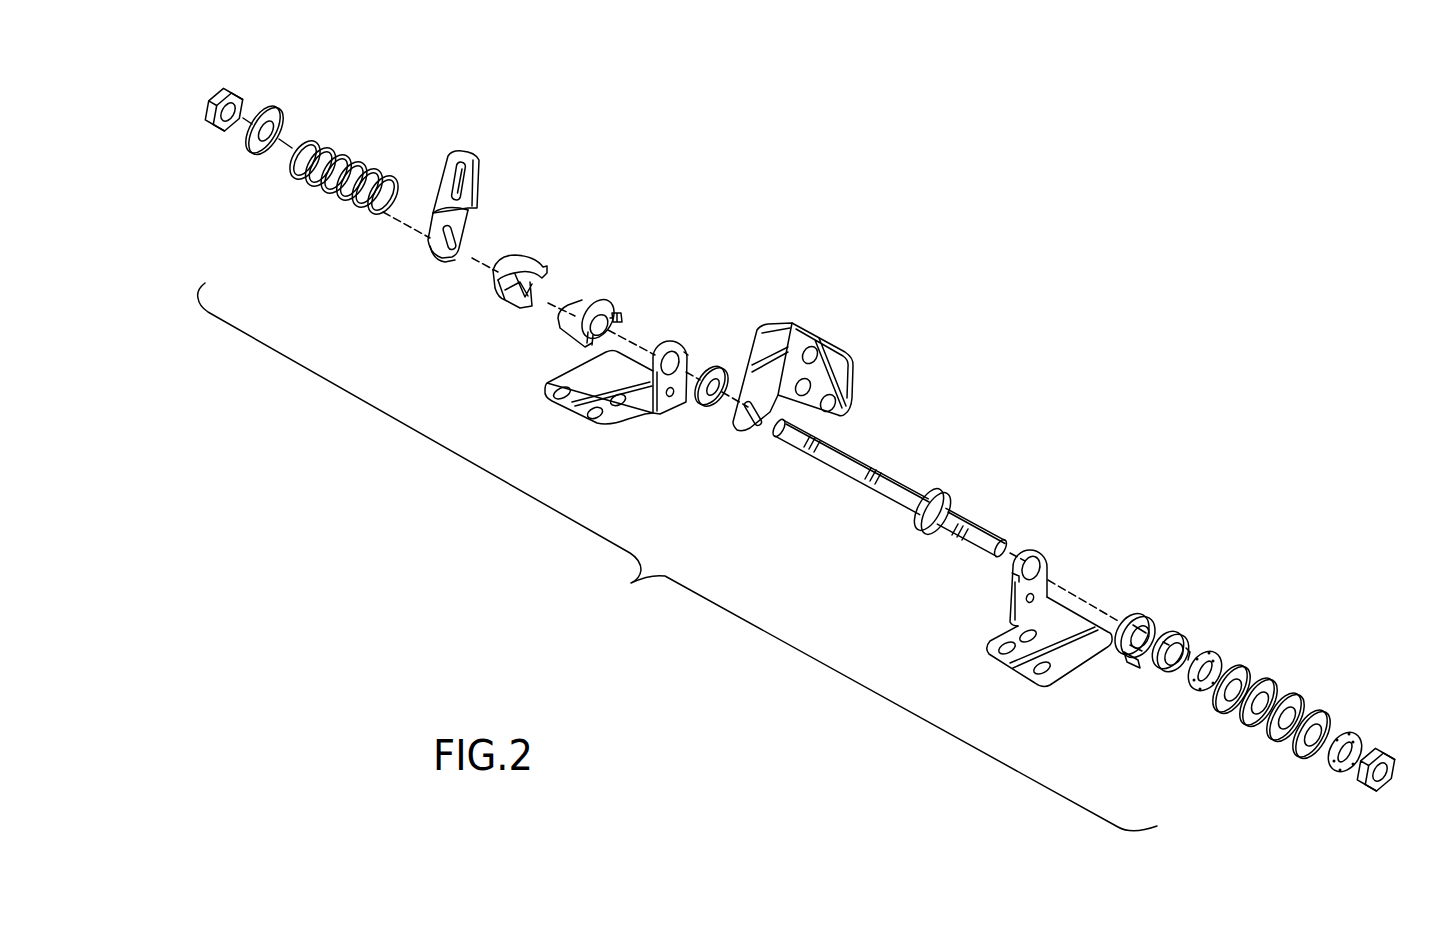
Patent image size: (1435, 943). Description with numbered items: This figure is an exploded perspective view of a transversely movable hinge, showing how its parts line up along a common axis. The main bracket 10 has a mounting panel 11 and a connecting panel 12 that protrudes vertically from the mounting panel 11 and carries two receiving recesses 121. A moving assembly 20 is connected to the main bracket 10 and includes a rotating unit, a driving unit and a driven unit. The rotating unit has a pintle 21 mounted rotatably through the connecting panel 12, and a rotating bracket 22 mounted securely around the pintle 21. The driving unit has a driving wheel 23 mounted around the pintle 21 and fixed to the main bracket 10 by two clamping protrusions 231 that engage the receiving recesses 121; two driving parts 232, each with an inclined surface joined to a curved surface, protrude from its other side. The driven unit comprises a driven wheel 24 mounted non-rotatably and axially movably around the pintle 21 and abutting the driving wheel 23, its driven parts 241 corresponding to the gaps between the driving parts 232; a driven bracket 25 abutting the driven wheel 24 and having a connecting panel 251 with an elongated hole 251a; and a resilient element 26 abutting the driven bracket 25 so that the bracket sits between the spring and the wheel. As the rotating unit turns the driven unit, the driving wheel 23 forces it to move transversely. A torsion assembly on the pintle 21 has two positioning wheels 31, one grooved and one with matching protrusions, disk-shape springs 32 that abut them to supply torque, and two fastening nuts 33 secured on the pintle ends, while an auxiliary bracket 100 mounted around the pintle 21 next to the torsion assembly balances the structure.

The main bracket 10 is at (617, 406).
The mounting panel 11 is at (598, 428).
The connecting panel 12 is at (707, 388).
The receiving recesses 121 is at (685, 354).
The moving assembly 20 is at (871, 392).
The pintle 21 is at (893, 500).
The rotating bracket 22 is at (781, 333).
The driving wheel 23 is at (634, 306).
The clamping protrusions 231 is at (623, 319).
The driving parts 232 is at (567, 308).
The driven wheel 24 is at (517, 274).
The driven parts 241 is at (527, 258).
The driven bracket 25 is at (478, 203).
The connecting panel 251 is at (498, 160).
The elongated hole 251a is at (463, 168).
The resilient element 26 is at (330, 145).
The positioning wheels 31 is at (1137, 612).
The disk-shape springs 32 is at (1306, 748).
The fastening nuts 33 is at (236, 94).
The auxiliary bracket 100 is at (1020, 673).